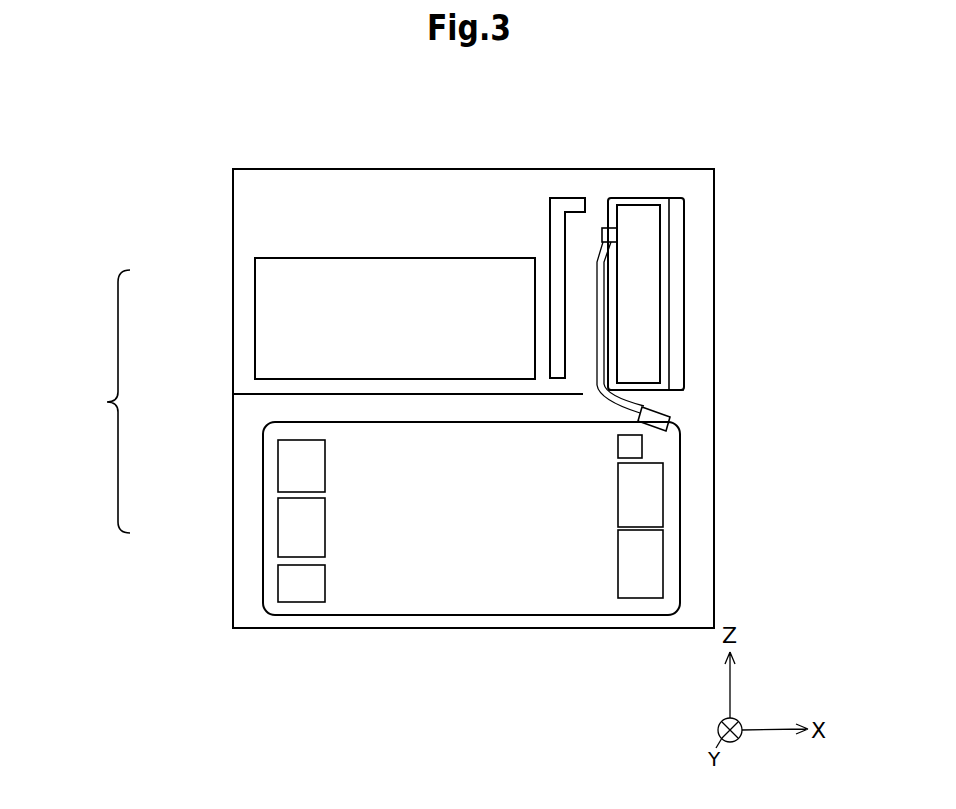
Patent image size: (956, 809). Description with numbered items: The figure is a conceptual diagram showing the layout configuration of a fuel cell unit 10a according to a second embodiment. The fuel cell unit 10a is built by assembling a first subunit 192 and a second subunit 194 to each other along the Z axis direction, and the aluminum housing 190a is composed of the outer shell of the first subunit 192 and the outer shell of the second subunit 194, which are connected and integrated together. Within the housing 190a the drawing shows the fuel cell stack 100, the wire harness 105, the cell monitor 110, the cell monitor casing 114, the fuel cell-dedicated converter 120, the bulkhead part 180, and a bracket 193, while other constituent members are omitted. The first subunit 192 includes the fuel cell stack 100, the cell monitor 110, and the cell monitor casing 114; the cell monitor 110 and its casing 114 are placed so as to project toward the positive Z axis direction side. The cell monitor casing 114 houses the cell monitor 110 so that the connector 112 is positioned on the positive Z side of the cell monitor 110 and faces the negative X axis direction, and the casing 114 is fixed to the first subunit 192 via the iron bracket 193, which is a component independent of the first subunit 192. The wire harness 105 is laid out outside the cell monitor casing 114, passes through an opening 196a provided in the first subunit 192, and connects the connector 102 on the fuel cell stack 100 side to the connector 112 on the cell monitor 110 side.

The fuel cell unit 10a is at (808, 166).
The fuel cell stack 100 is at (470, 615).
The connector 102 is at (670, 420).
The wire harness 105 is at (597, 258).
The cell monitor 110 is at (630, 198).
The connector 112 is at (608, 228).
The cell monitor casing 114 is at (652, 205).
The fuel cell-dedicated converter 120 is at (417, 258).
The bulkhead part 180 is at (547, 205).
The housing 190a is at (86, 401).
The first subunit 192 is at (233, 513).
The bracket 193 is at (684, 287).
The second subunit 194 is at (233, 282).
The opening 196a is at (610, 396).